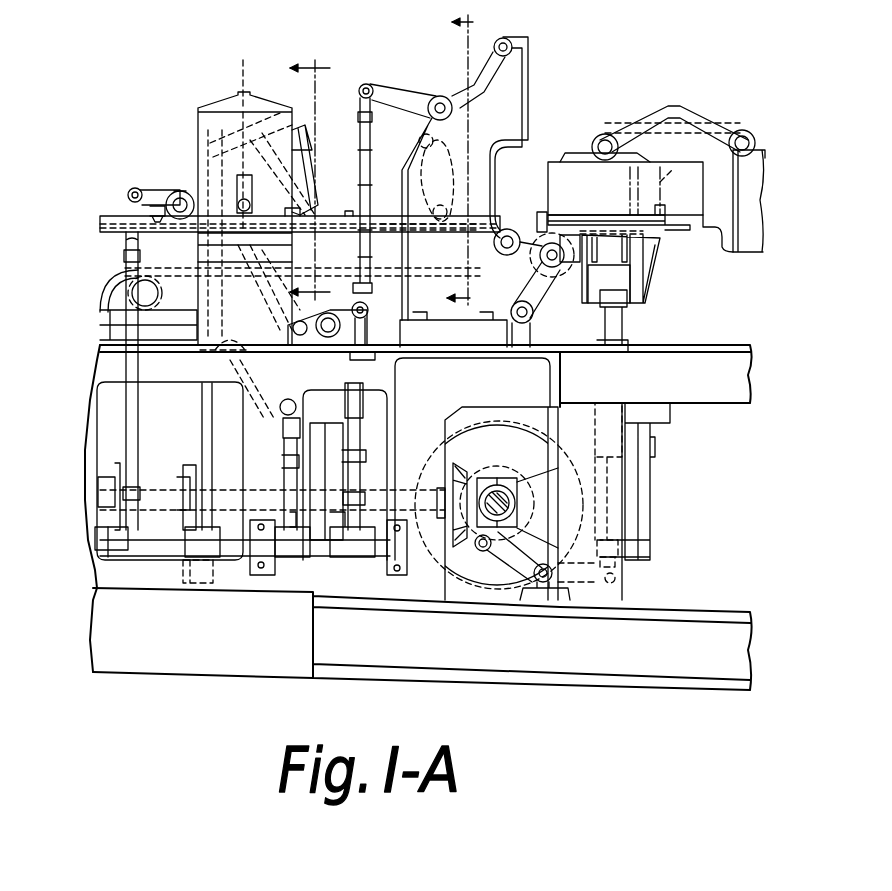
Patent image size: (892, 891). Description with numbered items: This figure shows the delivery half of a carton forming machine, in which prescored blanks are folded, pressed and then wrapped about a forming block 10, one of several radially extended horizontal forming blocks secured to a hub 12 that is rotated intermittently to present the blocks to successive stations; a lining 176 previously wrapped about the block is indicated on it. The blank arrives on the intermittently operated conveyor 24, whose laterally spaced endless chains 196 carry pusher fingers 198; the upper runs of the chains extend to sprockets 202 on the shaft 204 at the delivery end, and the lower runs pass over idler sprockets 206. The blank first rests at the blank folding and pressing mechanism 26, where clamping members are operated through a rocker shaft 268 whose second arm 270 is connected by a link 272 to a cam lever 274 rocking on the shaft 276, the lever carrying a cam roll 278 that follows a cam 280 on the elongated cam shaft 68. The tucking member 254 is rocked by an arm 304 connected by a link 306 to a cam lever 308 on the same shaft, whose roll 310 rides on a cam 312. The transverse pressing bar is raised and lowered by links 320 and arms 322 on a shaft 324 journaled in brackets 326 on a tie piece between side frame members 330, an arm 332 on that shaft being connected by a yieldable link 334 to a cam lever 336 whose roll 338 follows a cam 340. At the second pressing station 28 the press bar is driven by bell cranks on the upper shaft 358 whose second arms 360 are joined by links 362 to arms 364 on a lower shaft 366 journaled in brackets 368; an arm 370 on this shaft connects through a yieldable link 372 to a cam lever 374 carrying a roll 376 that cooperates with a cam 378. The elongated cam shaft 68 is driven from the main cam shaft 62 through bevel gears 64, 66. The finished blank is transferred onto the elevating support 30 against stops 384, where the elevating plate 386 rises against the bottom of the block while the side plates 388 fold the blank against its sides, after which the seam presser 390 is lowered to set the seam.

The forming block 10 is at (583, 162).
The hub 12 is at (737, 254).
The intermittently operated conveyor 24 is at (100, 216).
The blank folding and pressing mechanism 26 is at (212, 80).
The second pressing station 28 is at (433, 64).
The elevating support 30 is at (656, 306).
The main cam shaft 62 is at (503, 492).
The bevel gear 64 is at (494, 470).
The bevel gear 66 is at (460, 474).
The elongated cam shaft 68 is at (341, 547).
The lining 176 is at (660, 188).
The endless chains 196 is at (100, 235).
The pusher fingers 198 is at (150, 204).
The sprockets 202 is at (540, 266).
The shaft 204 is at (556, 290).
The idler sprockets 206 is at (152, 296).
The tucking member 254 is at (320, 186).
The rocker shaft 268 is at (180, 190).
The second arm 270 is at (140, 190).
The link 272 is at (126, 266).
The cam lever 274 is at (130, 560).
The shaft 276 is at (165, 556).
The cam roll 278 is at (110, 530).
The cam 280 is at (115, 470).
The arm 304 is at (244, 136).
The link 306 is at (202, 445).
The cam lever 308 is at (212, 568).
The roll 310 is at (190, 585).
The cam 312 is at (190, 470).
The links 320 is at (248, 288).
The arms 322 is at (245, 396).
The shaft 324 is at (215, 385).
The brackets 326 is at (225, 349).
The side frame members 330 is at (290, 263).
The arm 332 is at (345, 475).
The yieldable link 334 is at (293, 418).
The cam lever 336 is at (292, 560).
The roll 338 is at (303, 560).
The cam 340 is at (316, 466).
The upper shaft 358 is at (453, 109).
The second arms 360 is at (404, 92).
The links 362 is at (380, 130).
The arms 364 is at (340, 332).
The lower shaft 366 is at (366, 305).
The brackets 368 is at (365, 350).
The arm 370 is at (373, 331).
The yieldable link 372 is at (380, 424).
The cam lever 374 is at (350, 560).
The roll 376 is at (375, 490).
The cam 378 is at (366, 456).
The stops 384 is at (633, 226).
The elevating plate 386 is at (658, 248).
The side plates 388 is at (655, 273).
The seam presser 390 is at (618, 146).